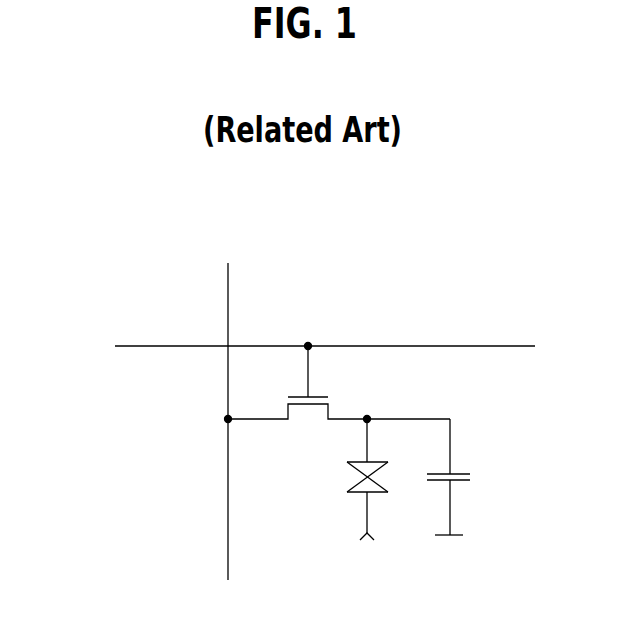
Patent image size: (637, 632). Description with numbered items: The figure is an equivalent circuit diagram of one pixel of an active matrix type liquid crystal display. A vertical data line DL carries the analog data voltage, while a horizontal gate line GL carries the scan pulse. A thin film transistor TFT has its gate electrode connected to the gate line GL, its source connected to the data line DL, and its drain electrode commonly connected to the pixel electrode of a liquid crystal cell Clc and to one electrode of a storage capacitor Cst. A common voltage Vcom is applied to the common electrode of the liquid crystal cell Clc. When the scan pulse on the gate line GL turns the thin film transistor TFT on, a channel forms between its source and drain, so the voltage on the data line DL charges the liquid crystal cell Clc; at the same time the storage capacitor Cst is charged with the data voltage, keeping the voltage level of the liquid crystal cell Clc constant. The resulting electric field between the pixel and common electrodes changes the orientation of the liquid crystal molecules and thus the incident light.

The data line DL is at (229, 405).
The gate line GL is at (301, 345).
The thin film transistor TFT is at (338, 383).
The liquid crystal cell Clc is at (345, 479).
The storage capacitor Cst is at (472, 477).
The common voltage Vcom is at (363, 553).